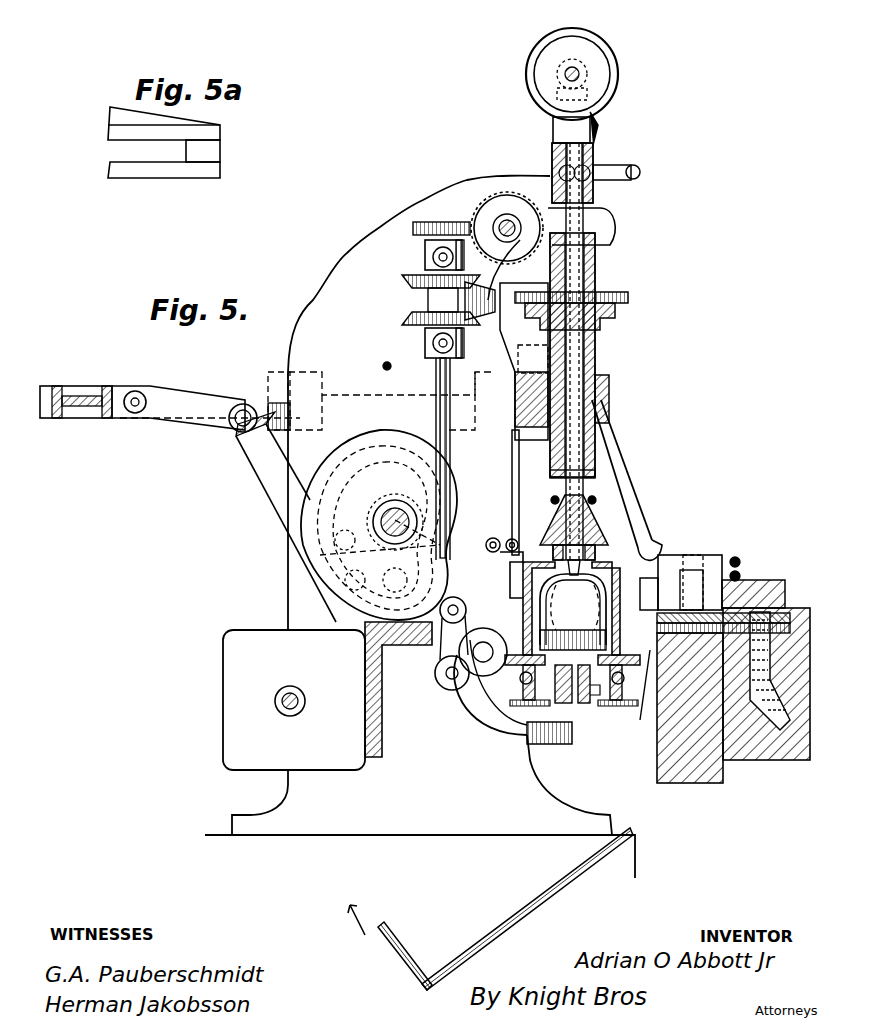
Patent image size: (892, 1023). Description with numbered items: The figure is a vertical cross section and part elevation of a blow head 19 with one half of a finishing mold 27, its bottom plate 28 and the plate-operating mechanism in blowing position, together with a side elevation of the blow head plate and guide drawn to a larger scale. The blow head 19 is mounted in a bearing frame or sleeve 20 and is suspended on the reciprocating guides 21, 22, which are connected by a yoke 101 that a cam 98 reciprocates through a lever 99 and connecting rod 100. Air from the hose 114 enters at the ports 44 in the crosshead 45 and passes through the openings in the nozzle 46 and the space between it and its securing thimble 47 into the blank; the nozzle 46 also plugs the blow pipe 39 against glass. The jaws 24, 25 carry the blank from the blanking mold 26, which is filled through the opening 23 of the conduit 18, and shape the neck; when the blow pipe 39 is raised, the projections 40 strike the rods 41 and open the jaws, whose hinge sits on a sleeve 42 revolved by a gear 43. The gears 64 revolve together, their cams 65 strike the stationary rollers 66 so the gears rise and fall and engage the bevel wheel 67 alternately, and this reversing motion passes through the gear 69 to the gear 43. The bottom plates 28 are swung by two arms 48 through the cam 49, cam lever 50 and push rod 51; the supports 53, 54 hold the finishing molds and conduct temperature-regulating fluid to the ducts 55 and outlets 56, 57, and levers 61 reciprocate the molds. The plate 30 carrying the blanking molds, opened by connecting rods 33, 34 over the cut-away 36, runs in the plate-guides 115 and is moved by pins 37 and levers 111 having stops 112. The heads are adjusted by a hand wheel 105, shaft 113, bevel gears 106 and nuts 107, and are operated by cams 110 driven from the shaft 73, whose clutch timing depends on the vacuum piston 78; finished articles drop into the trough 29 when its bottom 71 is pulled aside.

In FIG. 5A, the plate-guides 115 is at (164, 142).
In FIG. 5, the yoke 101 is at (110, 395).
In FIG. 5, the connecting rod 100 is at (185, 398).
In FIG. 5, the reciprocating guide 22 is at (238, 390).
In FIG. 5, the lever 99 is at (262, 470).
In FIG. 5, the shaft 73 is at (395, 515).
In FIG. 5, the cam 98 is at (345, 535).
In FIG. 5, the cam 49 is at (320, 575).
In FIG. 5, the stationary rollers 66 is at (430, 250).
In FIG. 5, the cams 65 is at (460, 272).
In FIG. 5, the gears 64 is at (410, 280).
In FIG. 5, the bevel wheel 67 is at (485, 318).
In FIG. 5, the piston 78 is at (423, 444).
In FIG. 5, the blow pipe 39 is at (560, 235).
In FIG. 5, the hand wheel 105 is at (620, 78).
In FIG. 5, the bevel gears 106 is at (532, 62).
In FIG. 5, the shaft 113 is at (560, 78).
In FIG. 5, the nuts 107 is at (535, 105).
In FIG. 5, the ports 44 is at (553, 170).
In FIG. 5, the crosshead 45 is at (596, 160).
In FIG. 5, the hose 114 is at (640, 168).
In FIG. 5, the cams 110 is at (612, 228).
In FIG. 5, the bearing frame or sleeve 20 is at (597, 355).
In FIG. 5, the levers 111 is at (580, 475).
In FIG. 5, the gear 69 is at (630, 297).
In FIG. 5, the gear 43 is at (617, 312).
In FIG. 5, the reciprocating guide 21 is at (533, 392).
In FIG. 5, the sleeve 42 is at (597, 440).
In FIG. 5, the blow head 19 is at (584, 480).
In FIG. 5, the rods 41 is at (595, 500).
In FIG. 5, the jaw 25 is at (596, 500).
In FIG. 5, the projections 40 is at (610, 528).
In FIG. 5, the stops 112 is at (560, 470).
In FIG. 5, the jaw 24 is at (540, 497).
In FIG. 5, the securing thimble 47 is at (545, 520).
In FIG. 5, the bottom plate 28 is at (571, 608).
In FIG. 5, the ducts 55 is at (510, 578).
In FIG. 5, the outlet 57 is at (491, 534).
In FIG. 5, the outlet 56 is at (486, 548).
In FIG. 5, the blanking mold 26 is at (640, 588).
In FIG. 5, the nozzle 46 is at (670, 555).
In FIG. 5, the connecting rod 33 is at (752, 555).
In FIG. 5, the connecting rod 34 is at (751, 570).
In FIG. 5, the cut-away of furnace shelf 36 is at (740, 595).
In FIG. 5, the plate 30 is at (772, 669).
In FIG. 5, the conduit 18 is at (765, 705).
In FIG. 5, the finishing mold 27 is at (707, 618).
In FIG. 5, the opening 23 is at (690, 628).
In FIG. 5, the arms 48 is at (488, 720).
In FIG. 5, the cam lever 50 is at (466, 610).
In FIG. 5, the push rod 51 is at (452, 640).
In FIG. 5, the support 54 is at (520, 685).
In FIG. 5, the support 53 is at (600, 690).
In FIG. 5, the pins 37 is at (648, 685).
In FIG. 5, the lever 61 is at (570, 745).
In FIG. 5, the trough 29 is at (556, 900).
In FIG. 5, the bottom of trough 71 is at (395, 948).